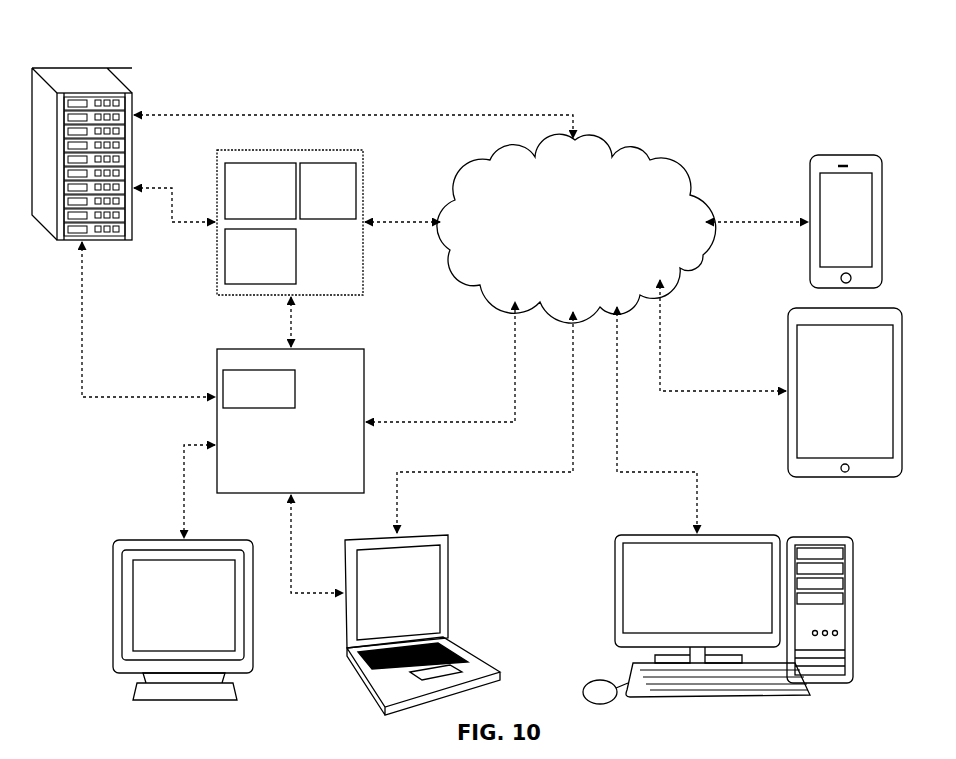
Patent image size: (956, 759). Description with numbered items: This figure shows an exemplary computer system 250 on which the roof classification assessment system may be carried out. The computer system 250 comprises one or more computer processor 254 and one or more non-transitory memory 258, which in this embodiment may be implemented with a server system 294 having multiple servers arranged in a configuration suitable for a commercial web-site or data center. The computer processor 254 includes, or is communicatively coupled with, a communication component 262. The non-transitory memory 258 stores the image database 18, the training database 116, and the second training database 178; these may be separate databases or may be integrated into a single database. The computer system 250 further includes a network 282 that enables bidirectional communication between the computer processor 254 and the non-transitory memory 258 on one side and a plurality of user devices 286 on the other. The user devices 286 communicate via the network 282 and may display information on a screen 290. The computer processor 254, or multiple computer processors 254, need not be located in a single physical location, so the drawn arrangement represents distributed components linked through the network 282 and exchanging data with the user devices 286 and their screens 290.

The computer system 250 is at (799, 50).
The server system 294 is at (82, 66).
The non-transitory memory 258 is at (213, 245).
The second training database 178 is at (260, 191).
The image database 18 is at (328, 191).
The training database 116 is at (260, 256).
The computer processor 254 is at (216, 408).
The communication component 262 is at (295, 388).
The network 282 is at (628, 148).
The user device 286 is at (882, 253).
The screen 290 is at (863, 193).